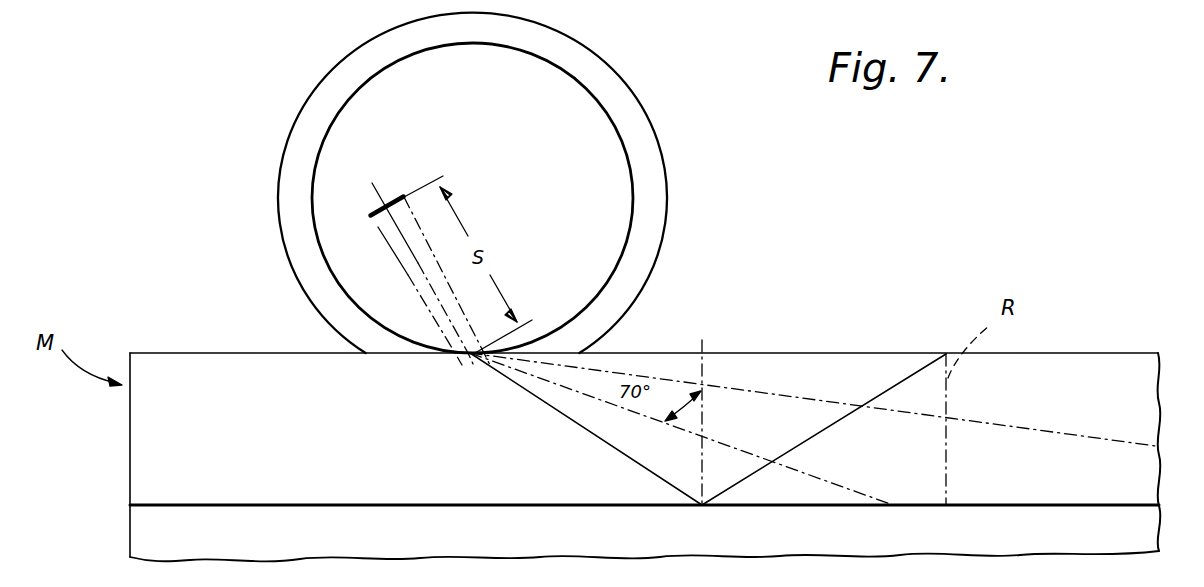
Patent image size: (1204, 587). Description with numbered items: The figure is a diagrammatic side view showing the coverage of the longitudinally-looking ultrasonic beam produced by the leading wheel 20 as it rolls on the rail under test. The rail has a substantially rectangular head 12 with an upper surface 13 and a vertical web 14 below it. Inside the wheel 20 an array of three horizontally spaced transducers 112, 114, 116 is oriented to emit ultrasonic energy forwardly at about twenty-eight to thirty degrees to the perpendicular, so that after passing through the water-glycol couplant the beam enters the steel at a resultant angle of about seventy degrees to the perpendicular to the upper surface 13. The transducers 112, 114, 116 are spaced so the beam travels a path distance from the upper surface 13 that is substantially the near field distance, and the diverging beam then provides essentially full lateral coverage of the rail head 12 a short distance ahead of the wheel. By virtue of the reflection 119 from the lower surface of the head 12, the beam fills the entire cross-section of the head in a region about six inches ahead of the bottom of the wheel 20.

The leading wheel 20 is at (670, 170).
The upper surface 13 is at (655, 352).
The head 12 is at (314, 441).
The vertical web 14 is at (349, 545).
The transducer 112 is at (392, 198).
The transducer 114 is at (423, 274).
The transducer 116 is at (447, 281).
The reflection 119 is at (702, 506).